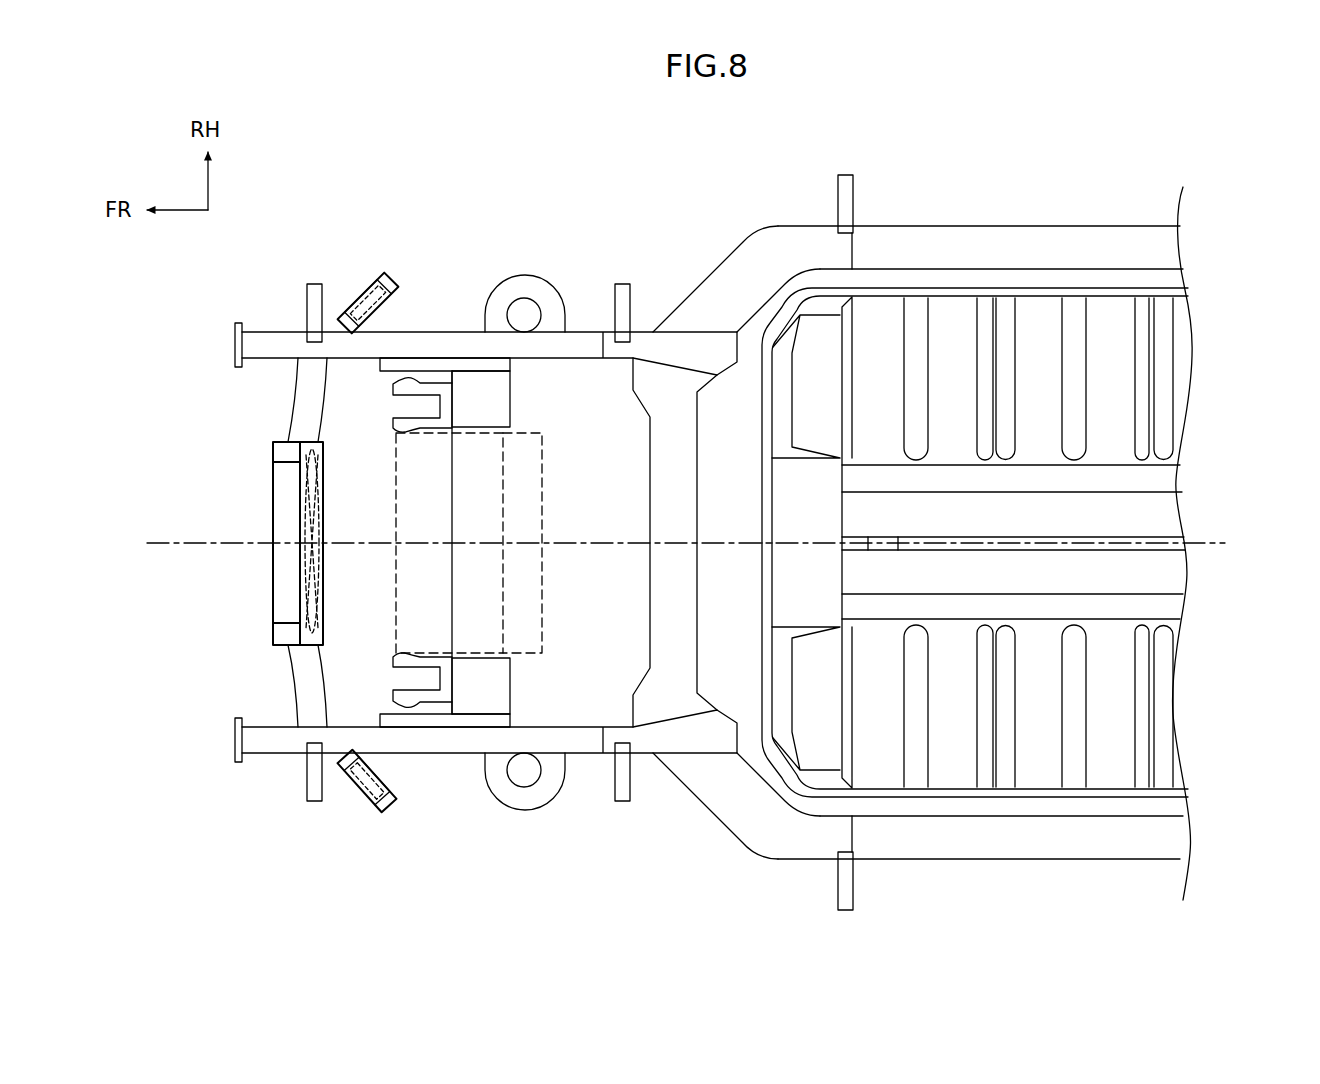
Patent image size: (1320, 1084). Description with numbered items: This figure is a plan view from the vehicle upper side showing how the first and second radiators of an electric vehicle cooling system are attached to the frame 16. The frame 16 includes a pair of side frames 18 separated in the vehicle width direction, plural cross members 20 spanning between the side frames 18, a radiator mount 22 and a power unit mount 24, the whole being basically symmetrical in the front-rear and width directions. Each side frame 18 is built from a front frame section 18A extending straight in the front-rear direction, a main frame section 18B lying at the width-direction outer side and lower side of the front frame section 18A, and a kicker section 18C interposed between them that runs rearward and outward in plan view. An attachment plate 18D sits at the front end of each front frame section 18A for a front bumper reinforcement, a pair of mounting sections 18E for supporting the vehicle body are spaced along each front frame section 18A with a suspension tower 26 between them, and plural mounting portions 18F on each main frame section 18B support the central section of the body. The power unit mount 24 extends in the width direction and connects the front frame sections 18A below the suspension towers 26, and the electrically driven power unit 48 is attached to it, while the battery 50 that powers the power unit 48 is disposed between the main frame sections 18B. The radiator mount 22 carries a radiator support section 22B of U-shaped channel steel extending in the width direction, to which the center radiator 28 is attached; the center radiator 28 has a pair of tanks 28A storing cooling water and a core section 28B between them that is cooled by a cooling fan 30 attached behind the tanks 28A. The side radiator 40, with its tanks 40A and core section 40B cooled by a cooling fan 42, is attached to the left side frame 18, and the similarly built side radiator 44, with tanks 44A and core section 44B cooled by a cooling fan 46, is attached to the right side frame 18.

The frame 16 is at (210, 645).
The side frame 18 is at (805, 210).
The front frame section 18A is at (270, 338).
The main frame section 18B is at (1038, 243).
The kicker section 18C is at (727, 270).
The attachment plate 18D is at (235, 340).
The mounting section 18E is at (312, 284).
The mounting portion 18F is at (852, 176).
The cross member 20 is at (660, 610).
The radiator mount 22 is at (311, 692).
The radiator support section 22B is at (320, 670).
The power unit mount 24 is at (485, 690).
The suspension tower 26 is at (518, 275).
The center radiator 28 is at (255, 483).
The tank 28A is at (283, 452).
The core section 28B is at (283, 515).
The cooling fan 30 is at (325, 478).
The side radiator 40 is at (384, 813).
The tank 40A is at (342, 750).
The core section 40B is at (355, 792).
The cooling fan 42 is at (386, 777).
The side radiator 44 is at (386, 272).
The tank 44A is at (390, 282).
The core section 44B is at (358, 290).
The cooling fan 46 is at (388, 312).
The power unit 48 is at (538, 434).
The battery 50 is at (1137, 363).